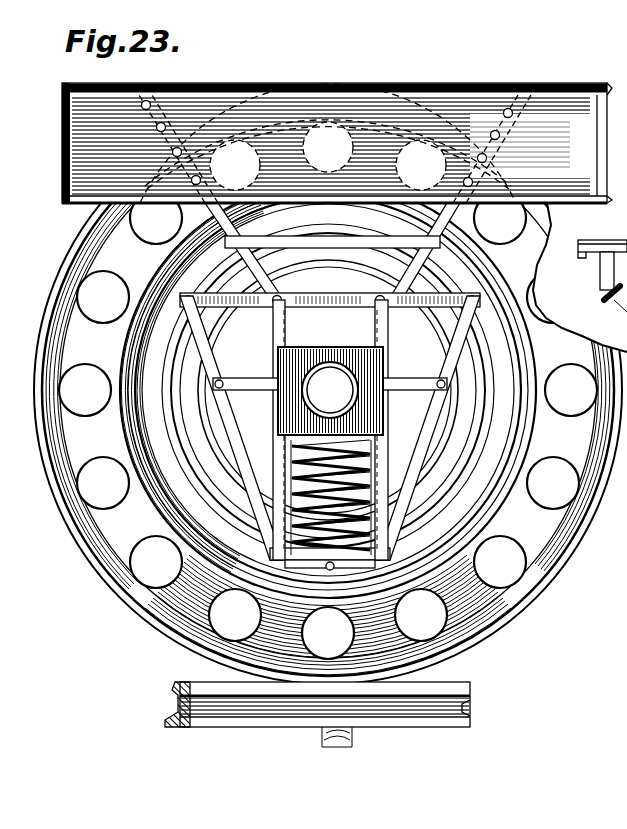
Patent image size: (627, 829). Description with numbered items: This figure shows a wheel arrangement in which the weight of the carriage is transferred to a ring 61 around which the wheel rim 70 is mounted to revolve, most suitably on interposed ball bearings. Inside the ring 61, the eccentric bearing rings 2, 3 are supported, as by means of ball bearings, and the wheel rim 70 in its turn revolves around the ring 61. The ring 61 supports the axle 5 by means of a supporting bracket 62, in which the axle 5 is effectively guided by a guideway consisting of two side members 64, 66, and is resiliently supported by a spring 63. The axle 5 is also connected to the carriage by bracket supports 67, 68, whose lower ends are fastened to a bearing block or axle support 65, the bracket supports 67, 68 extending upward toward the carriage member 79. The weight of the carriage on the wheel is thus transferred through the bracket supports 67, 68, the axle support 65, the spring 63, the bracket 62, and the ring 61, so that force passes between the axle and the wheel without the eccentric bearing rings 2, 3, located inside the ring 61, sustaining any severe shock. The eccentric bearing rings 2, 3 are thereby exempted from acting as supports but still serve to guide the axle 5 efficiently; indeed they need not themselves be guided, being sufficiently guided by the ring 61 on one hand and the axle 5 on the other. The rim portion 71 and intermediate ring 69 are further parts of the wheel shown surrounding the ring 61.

The beam 79 is at (337, 143).
The bracket support 68 is at (512, 120).
The supporting bracket 62 is at (418, 298).
The bracket support 67 is at (251, 308).
The side member 64 is at (278, 358).
The side member 66 is at (370, 365).
The axle support 65 is at (357, 457).
The axle 5 is at (340, 393).
The eccentric bearing ring 2 is at (448, 405).
The eccentric bearing ring 3 is at (202, 408).
The wheel rim 70 is at (485, 441).
The rim inner flange 71 is at (478, 513).
The intermediate ring 69 is at (208, 477).
The ring 61 is at (246, 534).
The spring 63 is at (385, 542).